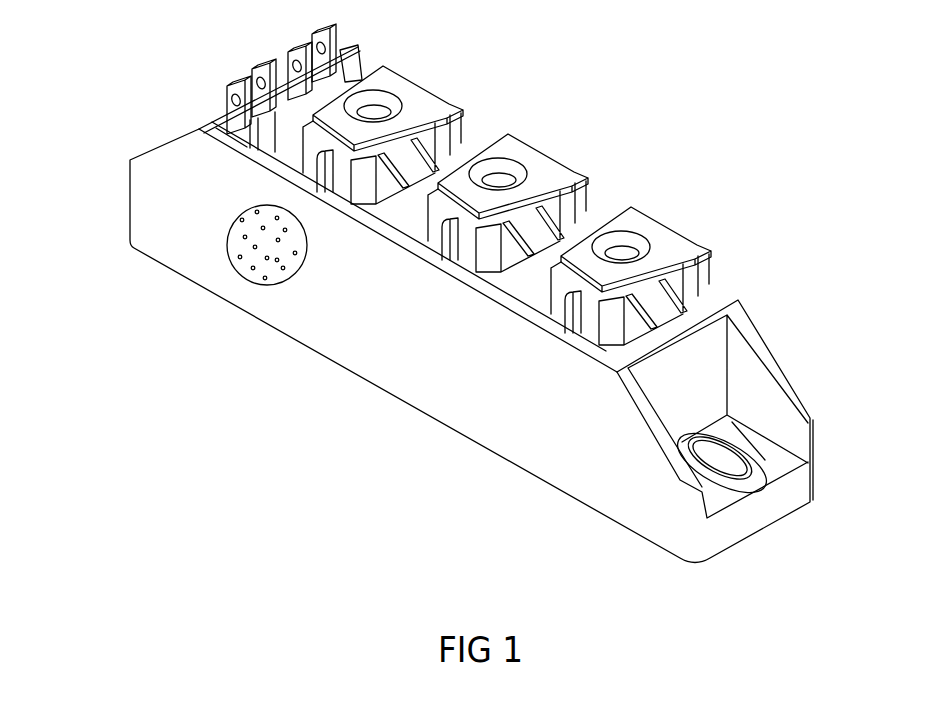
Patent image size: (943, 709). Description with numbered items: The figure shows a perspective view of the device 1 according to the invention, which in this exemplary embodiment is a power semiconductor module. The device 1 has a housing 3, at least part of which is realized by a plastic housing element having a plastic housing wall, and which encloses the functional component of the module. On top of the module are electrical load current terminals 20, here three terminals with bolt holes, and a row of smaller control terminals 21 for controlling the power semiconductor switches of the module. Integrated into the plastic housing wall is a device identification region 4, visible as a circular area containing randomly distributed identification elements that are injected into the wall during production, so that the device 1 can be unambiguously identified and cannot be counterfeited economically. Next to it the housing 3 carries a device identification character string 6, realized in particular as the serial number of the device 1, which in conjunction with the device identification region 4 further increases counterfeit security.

The device 1 is at (438, 299).
The housing 3 is at (617, 478).
The device identification region 4 is at (240, 275).
The device identification character string 6 is at (408, 350).
The electrical load current terminals 20 is at (630, 220).
The control terminals 21 is at (336, 41).